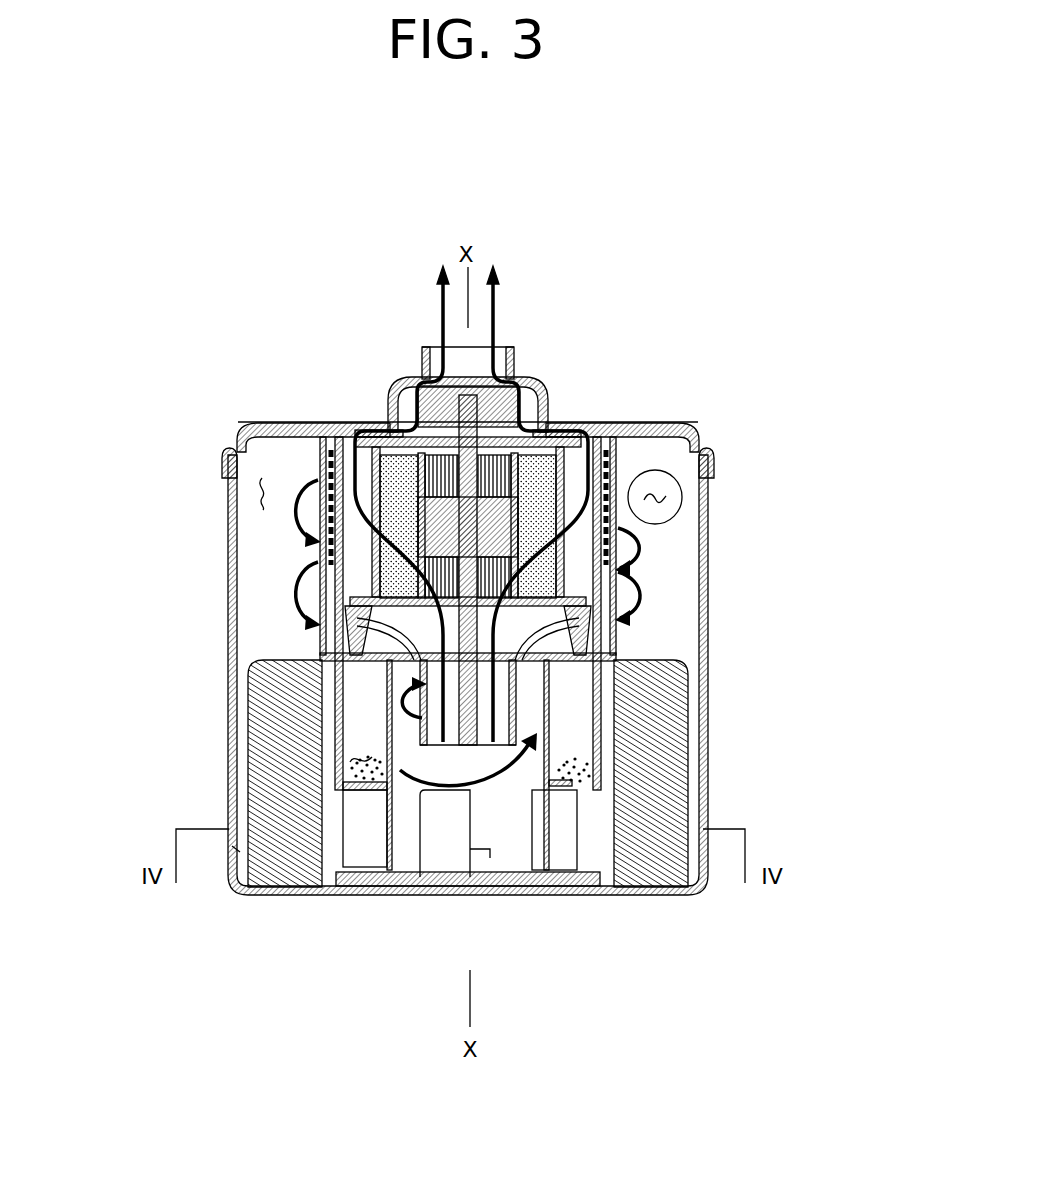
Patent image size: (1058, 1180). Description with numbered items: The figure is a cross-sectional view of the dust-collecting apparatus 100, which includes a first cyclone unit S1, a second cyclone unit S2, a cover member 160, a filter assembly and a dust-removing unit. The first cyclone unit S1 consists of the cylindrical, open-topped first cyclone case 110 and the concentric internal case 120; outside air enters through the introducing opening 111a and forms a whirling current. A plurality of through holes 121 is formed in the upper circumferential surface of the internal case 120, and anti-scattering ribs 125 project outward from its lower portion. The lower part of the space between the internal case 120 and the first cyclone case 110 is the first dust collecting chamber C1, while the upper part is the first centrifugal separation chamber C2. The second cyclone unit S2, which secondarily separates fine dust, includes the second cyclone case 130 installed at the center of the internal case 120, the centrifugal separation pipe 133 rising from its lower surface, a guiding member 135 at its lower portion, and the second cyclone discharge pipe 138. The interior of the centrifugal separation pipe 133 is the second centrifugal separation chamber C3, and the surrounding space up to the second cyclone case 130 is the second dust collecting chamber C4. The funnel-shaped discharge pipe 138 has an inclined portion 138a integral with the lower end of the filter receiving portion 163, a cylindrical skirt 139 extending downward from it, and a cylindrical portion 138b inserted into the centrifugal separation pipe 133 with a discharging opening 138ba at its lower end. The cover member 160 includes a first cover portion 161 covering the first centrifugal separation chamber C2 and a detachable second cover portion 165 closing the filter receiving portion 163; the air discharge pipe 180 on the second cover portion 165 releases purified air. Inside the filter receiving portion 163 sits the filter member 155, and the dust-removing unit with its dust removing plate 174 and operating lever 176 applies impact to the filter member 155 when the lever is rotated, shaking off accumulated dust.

The dust-collecting apparatus 100 is at (800, 183).
The first cyclone case 110 is at (230, 779).
The introducing opening 111a is at (660, 490).
The internal case 120 is at (333, 602).
The through holes 121 is at (322, 476).
The anti-scattering rib 125 is at (663, 838).
The second cyclone case 130 is at (513, 710).
The centrifugal separation pipe 133 is at (600, 735).
The guiding member 135 is at (567, 828).
The second cyclone discharge pipe 138 is at (789, 506).
The inclined portion 138a is at (612, 655).
The cylindrical portion 138b is at (645, 658).
The discharging opening 138ba is at (470, 745).
The cylindrical skirt 139 is at (358, 633).
The filter member 155 is at (601, 440).
The cover member 160 is at (365, 283).
The first cover portion 161 is at (249, 421).
The filter receiving portion 163 is at (334, 562).
The second cover portion 165 is at (370, 428).
The dust removing plate 174 is at (325, 505).
The operating lever 176 is at (540, 385).
The air discharge pipe 180 is at (514, 352).
The first dust collecting chamber C1 is at (236, 848).
The first centrifugal separation chamber C2 is at (258, 497).
The second centrifugal separation chamber C3 is at (490, 853).
The second dust collecting chamber C4 is at (367, 755).
The first cyclone unit S1 is at (90, 656).
The second cyclone unit S2 is at (880, 548).